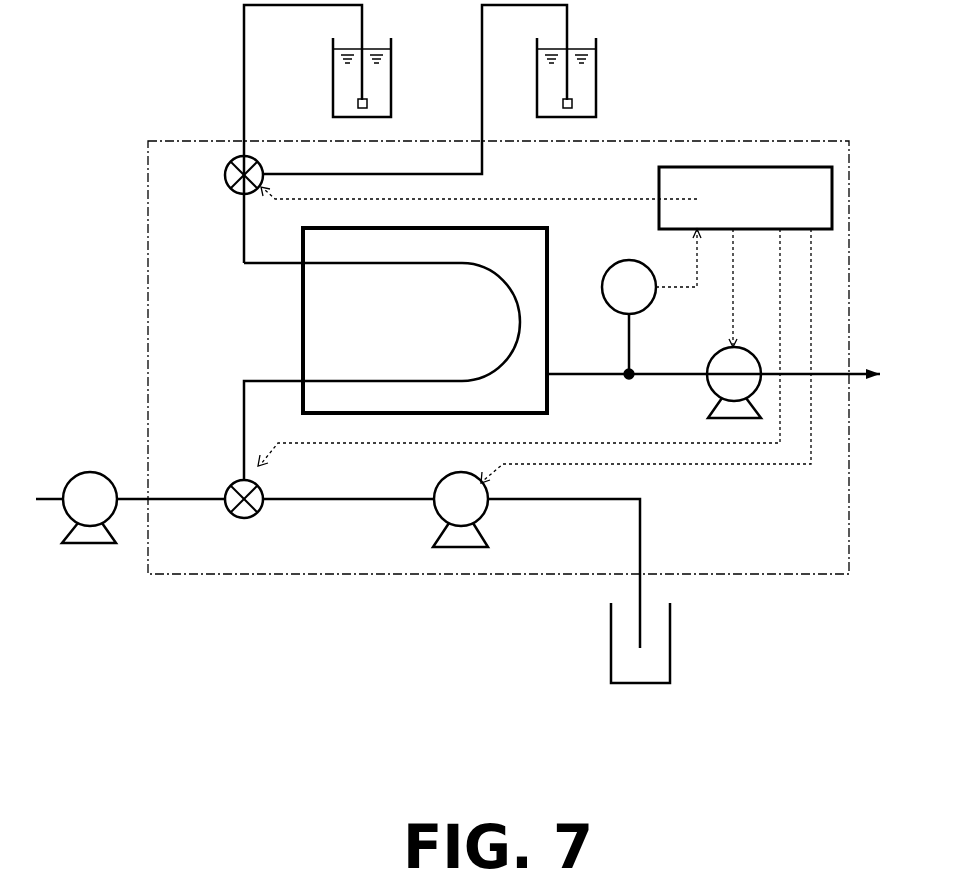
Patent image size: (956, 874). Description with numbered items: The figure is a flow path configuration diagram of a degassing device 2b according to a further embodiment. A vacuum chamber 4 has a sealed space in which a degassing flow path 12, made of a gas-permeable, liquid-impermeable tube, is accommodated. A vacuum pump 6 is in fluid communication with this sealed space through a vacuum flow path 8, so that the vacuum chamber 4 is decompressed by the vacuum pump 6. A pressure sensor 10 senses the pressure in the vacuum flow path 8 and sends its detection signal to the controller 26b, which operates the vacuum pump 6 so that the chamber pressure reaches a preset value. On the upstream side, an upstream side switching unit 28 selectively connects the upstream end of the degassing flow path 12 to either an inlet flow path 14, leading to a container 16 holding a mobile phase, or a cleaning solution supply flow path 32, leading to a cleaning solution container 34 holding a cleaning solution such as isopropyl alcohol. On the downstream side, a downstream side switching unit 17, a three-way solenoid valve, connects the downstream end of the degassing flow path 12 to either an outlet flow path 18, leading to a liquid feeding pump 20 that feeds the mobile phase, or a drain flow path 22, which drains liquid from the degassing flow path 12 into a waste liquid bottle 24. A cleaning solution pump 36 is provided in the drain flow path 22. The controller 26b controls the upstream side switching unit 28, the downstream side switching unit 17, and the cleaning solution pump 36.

The degassing device 2b is at (812, 139).
The vacuum chamber 4 is at (302, 320).
The vacuum pump 6 is at (747, 350).
The vacuum flow path 8 is at (585, 377).
The pressure sensor 10 is at (622, 262).
The degassing flow path 12 is at (373, 380).
The inlet flow path 14 is at (244, 106).
The container 16 is at (392, 77).
The downstream side switching unit 17 is at (233, 478).
The outlet flow path 18 is at (193, 498).
The liquid feeding pump 20 is at (80, 473).
The drain flow path 22 is at (642, 520).
The waste liquid bottle 24 is at (670, 643).
The controller 26b is at (832, 188).
The upstream side switching unit 28 is at (225, 173).
The cleaning solution supply flow path 32 is at (412, 174).
The cleaning solution container 34 is at (597, 76).
The cleaning solution pump 36 is at (488, 513).